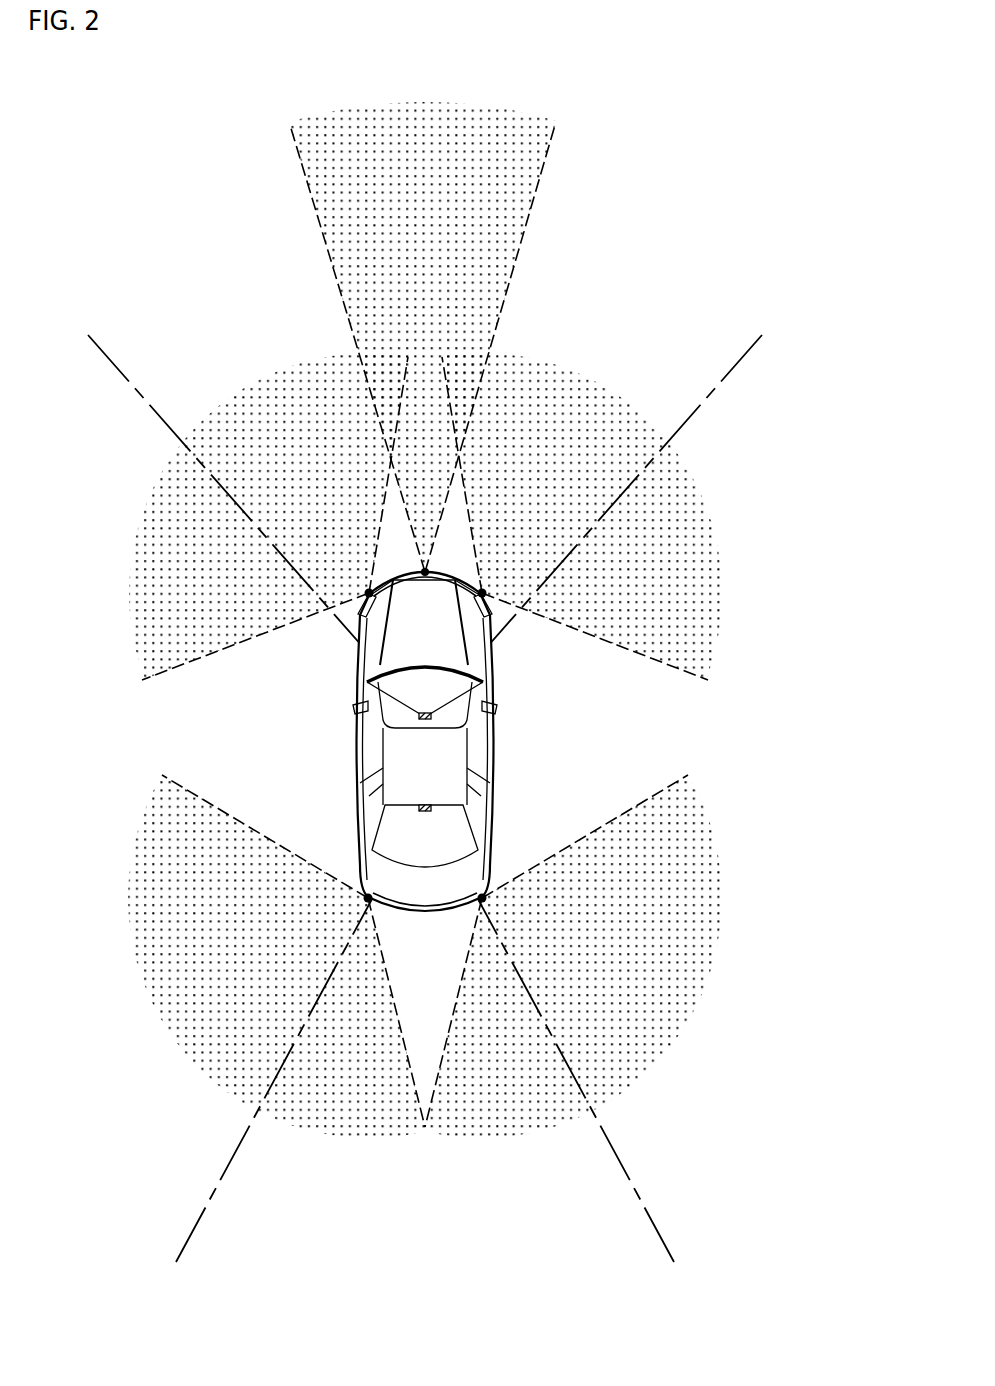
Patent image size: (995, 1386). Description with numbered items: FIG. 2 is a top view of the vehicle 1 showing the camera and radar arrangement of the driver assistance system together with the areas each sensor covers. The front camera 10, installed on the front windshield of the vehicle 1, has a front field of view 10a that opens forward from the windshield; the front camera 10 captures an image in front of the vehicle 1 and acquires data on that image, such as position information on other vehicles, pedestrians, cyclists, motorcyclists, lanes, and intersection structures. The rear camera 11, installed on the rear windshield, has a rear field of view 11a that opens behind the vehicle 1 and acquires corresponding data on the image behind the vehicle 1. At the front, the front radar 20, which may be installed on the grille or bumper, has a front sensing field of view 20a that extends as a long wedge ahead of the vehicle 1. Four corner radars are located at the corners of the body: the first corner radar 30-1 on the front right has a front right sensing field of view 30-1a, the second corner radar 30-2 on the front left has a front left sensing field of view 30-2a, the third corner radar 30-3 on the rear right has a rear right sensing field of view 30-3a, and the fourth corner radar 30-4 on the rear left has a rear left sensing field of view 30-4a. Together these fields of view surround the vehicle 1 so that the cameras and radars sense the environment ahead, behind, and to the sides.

The vehicle 1 is at (497, 734).
The front camera 10 is at (425, 719).
The front field of view 10a is at (126, 381).
The rear camera 11 is at (440, 810).
The rear field of view 11a is at (201, 1216).
The front radar 20 is at (426, 572).
The front sensing field of view 20a is at (515, 228).
The first corner radar 30-1 is at (482, 593).
The front right sensing field of view 30-1a is at (605, 402).
The second corner radar 30-2 is at (369, 593).
The front left sensing field of view 30-2a is at (242, 403).
The third corner radar 30-3 is at (482, 898).
The rear right sensing field of view 30-3a is at (674, 1026).
The fourth corner radar 30-4 is at (368, 898).
The rear left sensing field of view 30-4a is at (176, 1026).